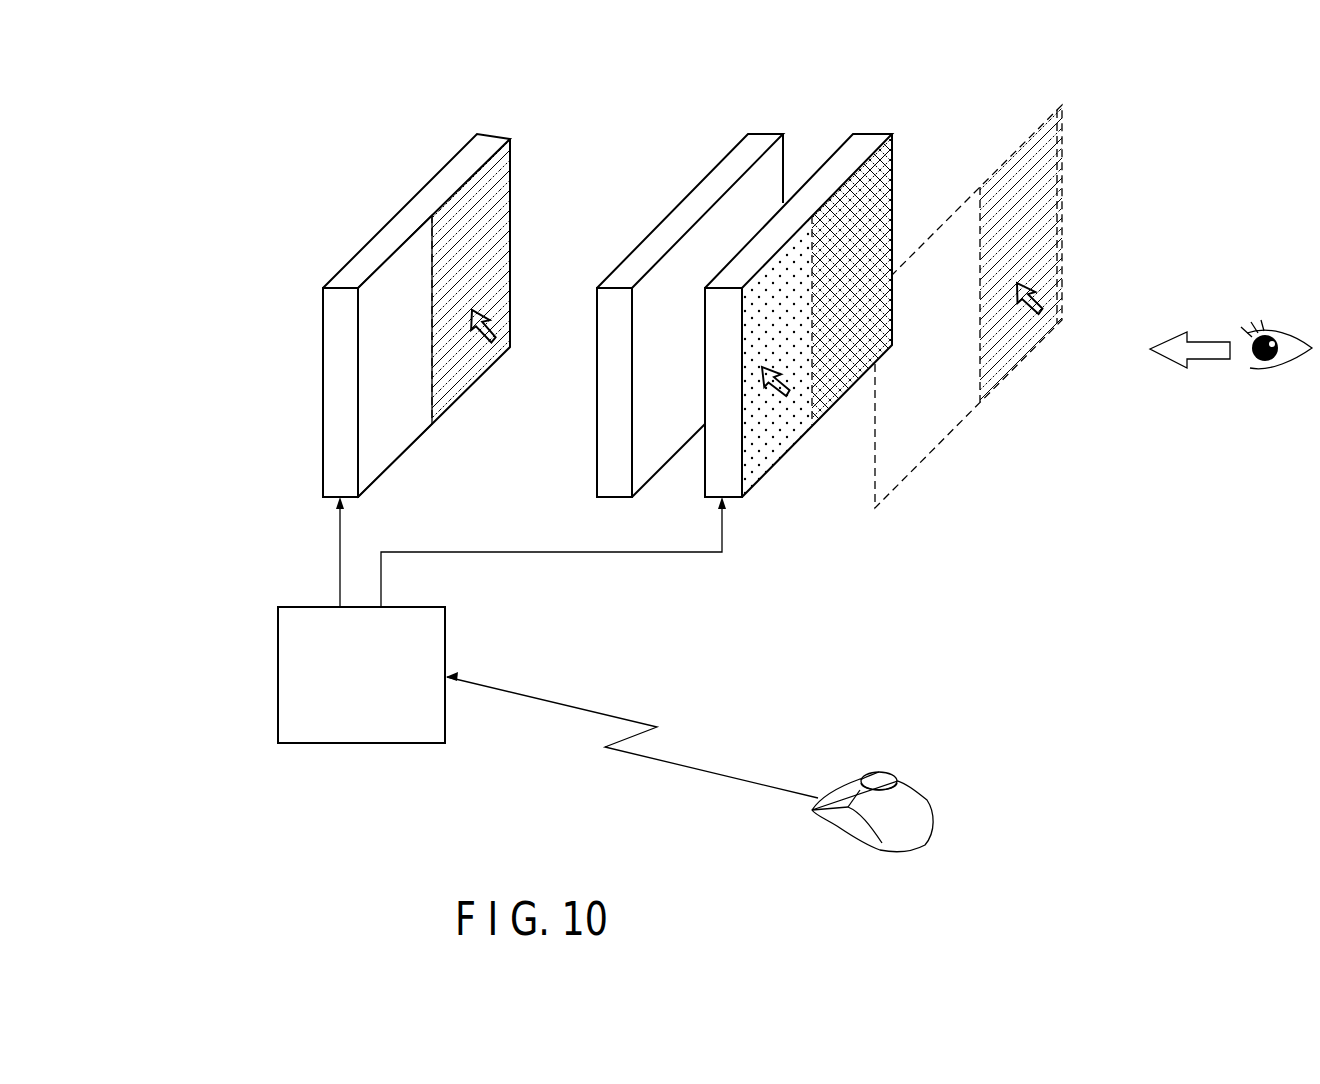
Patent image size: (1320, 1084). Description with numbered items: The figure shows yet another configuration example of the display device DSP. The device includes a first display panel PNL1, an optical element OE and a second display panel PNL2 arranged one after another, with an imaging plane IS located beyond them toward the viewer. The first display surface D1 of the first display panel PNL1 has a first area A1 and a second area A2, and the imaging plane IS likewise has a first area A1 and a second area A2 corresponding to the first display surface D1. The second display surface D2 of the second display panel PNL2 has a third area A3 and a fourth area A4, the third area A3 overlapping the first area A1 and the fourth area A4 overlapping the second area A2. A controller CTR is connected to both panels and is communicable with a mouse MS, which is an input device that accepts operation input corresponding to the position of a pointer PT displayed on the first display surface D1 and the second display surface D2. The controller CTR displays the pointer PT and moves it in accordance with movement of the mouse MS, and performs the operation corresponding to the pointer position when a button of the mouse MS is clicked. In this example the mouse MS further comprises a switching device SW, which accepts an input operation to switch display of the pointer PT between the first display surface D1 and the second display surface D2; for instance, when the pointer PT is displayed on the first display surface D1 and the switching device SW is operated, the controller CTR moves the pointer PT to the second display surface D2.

The display device DSP is at (258, 205).
The first display panel PNL1 is at (487, 142).
The optical element OE is at (760, 142).
The second display panel PNL2 is at (868, 142).
The imaging plane IS is at (1065, 137).
The pointer PT is at (503, 343).
The first area A1 is at (669, 347).
The second area A2 is at (747, 264).
The third area A3 is at (777, 356).
The fourth area A4 is at (852, 279).
The first display surface D1 is at (395, 458).
The second display surface D2 is at (766, 460).
The controller CTR is at (278, 664).
The mouse MS is at (845, 826).
The switching device SW is at (878, 772).